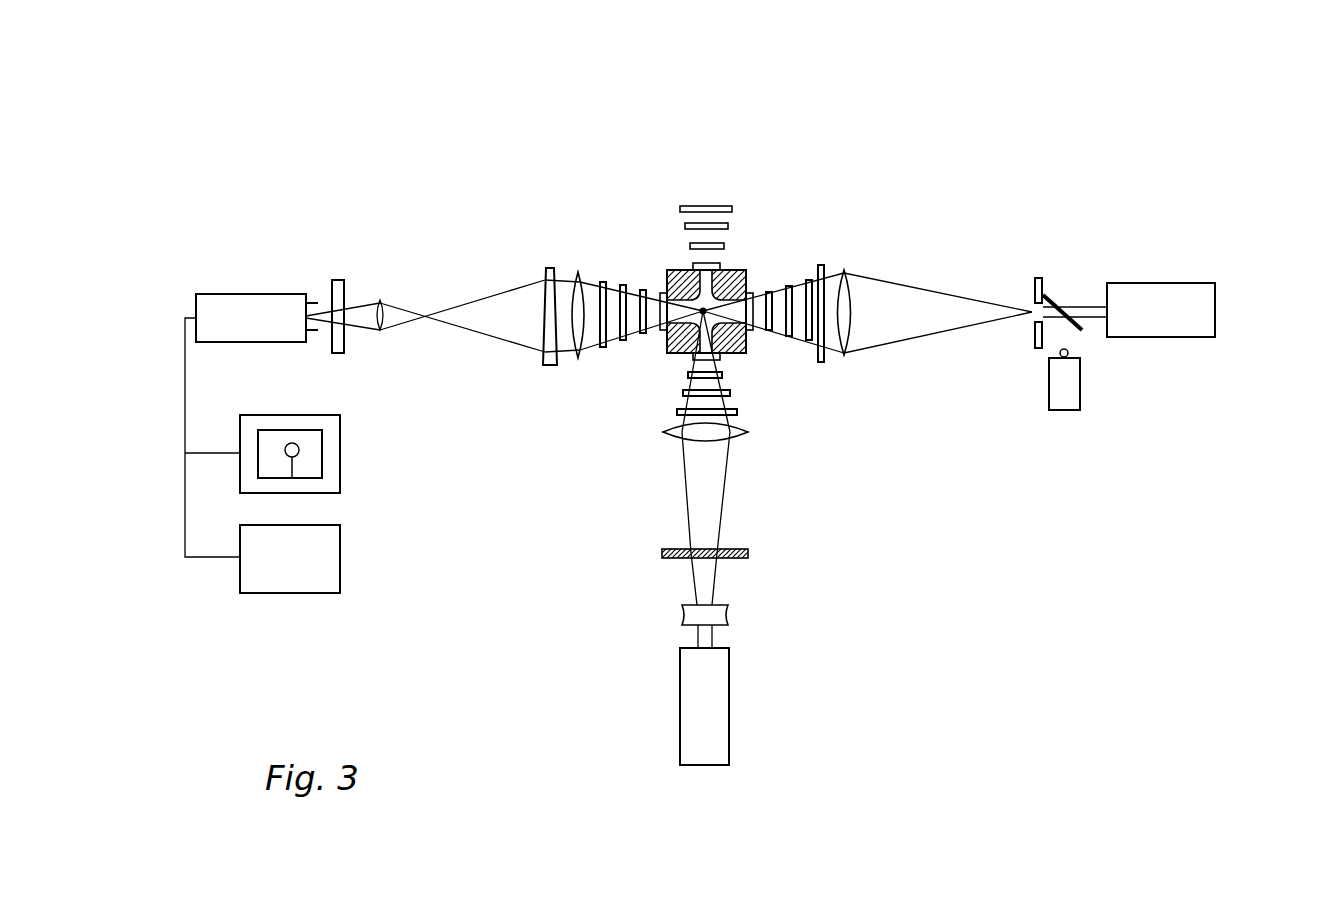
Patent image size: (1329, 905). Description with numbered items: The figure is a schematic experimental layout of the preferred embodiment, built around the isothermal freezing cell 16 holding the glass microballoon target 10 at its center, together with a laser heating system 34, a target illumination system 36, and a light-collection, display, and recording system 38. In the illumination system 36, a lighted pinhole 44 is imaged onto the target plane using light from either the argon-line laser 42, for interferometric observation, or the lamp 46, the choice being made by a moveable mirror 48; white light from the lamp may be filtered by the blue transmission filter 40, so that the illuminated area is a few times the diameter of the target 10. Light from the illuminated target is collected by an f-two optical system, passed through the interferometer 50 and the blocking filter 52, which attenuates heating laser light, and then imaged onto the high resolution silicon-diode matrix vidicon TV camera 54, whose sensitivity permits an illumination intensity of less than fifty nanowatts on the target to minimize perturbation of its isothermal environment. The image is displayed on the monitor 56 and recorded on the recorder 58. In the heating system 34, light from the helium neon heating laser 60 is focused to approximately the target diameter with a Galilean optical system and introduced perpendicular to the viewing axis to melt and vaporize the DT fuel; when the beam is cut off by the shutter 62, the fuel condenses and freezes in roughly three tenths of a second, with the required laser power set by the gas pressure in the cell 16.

The glass microballoon target 10 is at (702, 310).
The isothermal freezing cell 16 is at (749, 278).
The laser heating system 34 is at (827, 632).
The target illumination system 36 is at (997, 494).
The light-collection, display, and recording system 38 is at (414, 115).
The blue transmission filter 40 is at (822, 268).
The 4880-Å laser 42 is at (1186, 337).
The lighted pinhole 44 is at (1031, 315).
The lamp 46 is at (1081, 395).
The moveable mirror 48 is at (1053, 292).
The interferometer 50 is at (550, 268).
The 6328-Å blocking filter 52 is at (345, 282).
The TV camera 54 is at (228, 294).
The monitor 56 is at (340, 453).
The recorder 58 is at (340, 550).
The heating laser 60 is at (729, 726).
The shutter 62 is at (720, 552).